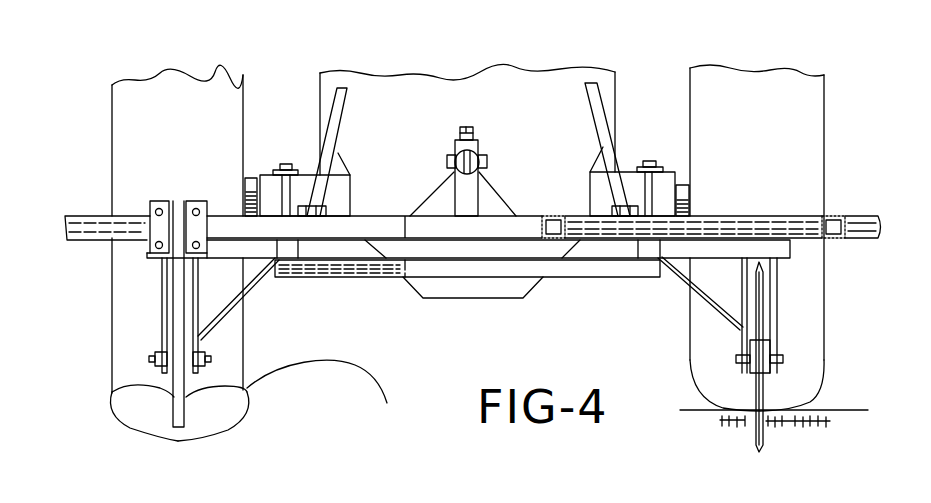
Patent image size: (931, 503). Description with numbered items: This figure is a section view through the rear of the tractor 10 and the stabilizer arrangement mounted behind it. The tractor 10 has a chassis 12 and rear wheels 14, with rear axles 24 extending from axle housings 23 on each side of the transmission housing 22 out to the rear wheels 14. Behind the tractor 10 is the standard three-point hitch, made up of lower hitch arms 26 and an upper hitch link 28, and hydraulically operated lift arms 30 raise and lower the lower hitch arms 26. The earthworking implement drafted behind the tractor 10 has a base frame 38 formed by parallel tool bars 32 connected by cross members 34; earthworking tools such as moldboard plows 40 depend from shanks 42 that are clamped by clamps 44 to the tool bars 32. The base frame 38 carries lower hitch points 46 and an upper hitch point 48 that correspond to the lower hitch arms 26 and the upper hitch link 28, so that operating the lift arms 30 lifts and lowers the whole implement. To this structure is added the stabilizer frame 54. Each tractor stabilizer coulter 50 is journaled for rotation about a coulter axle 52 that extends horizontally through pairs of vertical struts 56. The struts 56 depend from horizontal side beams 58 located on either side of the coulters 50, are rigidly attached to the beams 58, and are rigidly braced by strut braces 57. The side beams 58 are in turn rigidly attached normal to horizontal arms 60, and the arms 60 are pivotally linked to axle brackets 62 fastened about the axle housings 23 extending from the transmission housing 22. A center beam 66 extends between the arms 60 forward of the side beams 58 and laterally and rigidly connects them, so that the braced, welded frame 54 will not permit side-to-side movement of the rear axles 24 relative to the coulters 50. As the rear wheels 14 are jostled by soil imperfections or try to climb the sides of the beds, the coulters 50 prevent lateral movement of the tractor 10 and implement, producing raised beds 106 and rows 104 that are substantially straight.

The tractor 10 is at (489, 66).
The chassis 12 is at (378, 83).
The rear wheels 14 is at (206, 82).
The transmission housing 22 is at (500, 290).
The axle housings 23 is at (302, 192).
The rear axles 24 is at (254, 195).
The lower hitch arms 26 is at (320, 207).
The upper hitch link 28 is at (478, 145).
The lift arms 30 is at (340, 112).
The tool bars 32 is at (463, 228).
The cross members 34 is at (552, 222).
The base frame 38 is at (409, 195).
The moldboard plows 40 is at (248, 412).
The shanks 42 is at (182, 325).
The clamps 44 is at (176, 191).
The lower hitch points 46 is at (325, 215).
The upper hitch point 48 is at (487, 165).
The tractor stabilizer coulter 50 is at (760, 298).
The coulter axle 52 is at (162, 358).
The stabilizer frame 54 is at (597, 288).
The vertical struts 56 is at (163, 285).
The strut braces 57 is at (262, 273).
The side beams 58 is at (243, 252).
The horizontal arms 60 is at (288, 245).
The axle brackets 62 is at (286, 168).
The center beam 66 is at (403, 278).
The rows 104 is at (167, 449).
The raised beds 106 is at (318, 410).